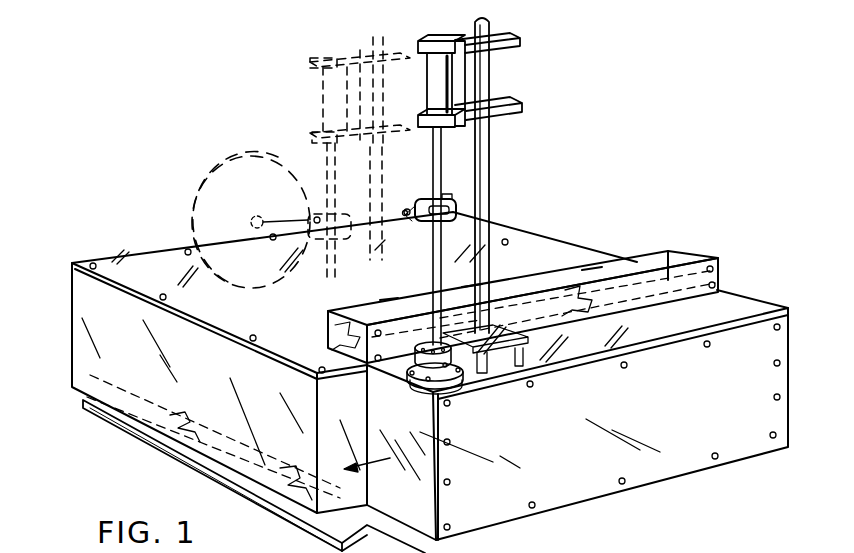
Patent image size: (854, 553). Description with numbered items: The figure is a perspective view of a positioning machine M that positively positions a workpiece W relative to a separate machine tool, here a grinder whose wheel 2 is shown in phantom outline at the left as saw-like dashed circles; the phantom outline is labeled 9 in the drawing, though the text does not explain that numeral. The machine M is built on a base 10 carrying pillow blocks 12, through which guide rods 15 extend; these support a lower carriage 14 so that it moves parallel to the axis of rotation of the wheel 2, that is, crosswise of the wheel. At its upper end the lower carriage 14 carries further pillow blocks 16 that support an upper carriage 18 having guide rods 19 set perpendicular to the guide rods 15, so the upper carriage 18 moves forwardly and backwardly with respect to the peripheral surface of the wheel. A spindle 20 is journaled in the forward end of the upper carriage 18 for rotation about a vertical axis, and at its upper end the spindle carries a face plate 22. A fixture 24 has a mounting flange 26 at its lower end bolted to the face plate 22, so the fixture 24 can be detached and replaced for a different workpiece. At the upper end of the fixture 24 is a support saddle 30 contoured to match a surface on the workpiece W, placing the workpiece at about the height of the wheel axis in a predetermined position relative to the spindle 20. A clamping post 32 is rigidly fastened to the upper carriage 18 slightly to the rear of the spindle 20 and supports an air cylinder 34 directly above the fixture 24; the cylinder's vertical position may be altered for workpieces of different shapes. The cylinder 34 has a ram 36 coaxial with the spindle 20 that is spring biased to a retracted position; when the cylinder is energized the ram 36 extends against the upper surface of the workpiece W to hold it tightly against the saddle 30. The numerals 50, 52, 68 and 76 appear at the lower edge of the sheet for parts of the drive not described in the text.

The saw blade 9 is at (212, 172).
The base 10 is at (140, 430).
The pillow blocks 12 is at (172, 458).
The lower carriage 14 is at (130, 363).
The guide rods 15 is at (245, 399).
The pillow blocks 16 is at (330, 343).
The upper carriage 18 is at (697, 412).
The guide rods 19 is at (680, 275).
The spindle 20 is at (453, 382).
The face plate 22 is at (423, 369).
The fixture 24 is at (432, 269).
The mounting flange 26 is at (413, 344).
The support saddle 30 is at (412, 222).
The clamping post 32 is at (490, 183).
The air cylinder 34 is at (433, 93).
The ram 36 is at (420, 172).
The workpiece W is at (448, 196).
The positioning machine M is at (568, 172).
The wheel 2 is at (23, 245).
The drive element 50 is at (648, 552).
The drive element 52 is at (706, 546).
The drive element 68 is at (549, 552).
The drive element 76 is at (606, 546).